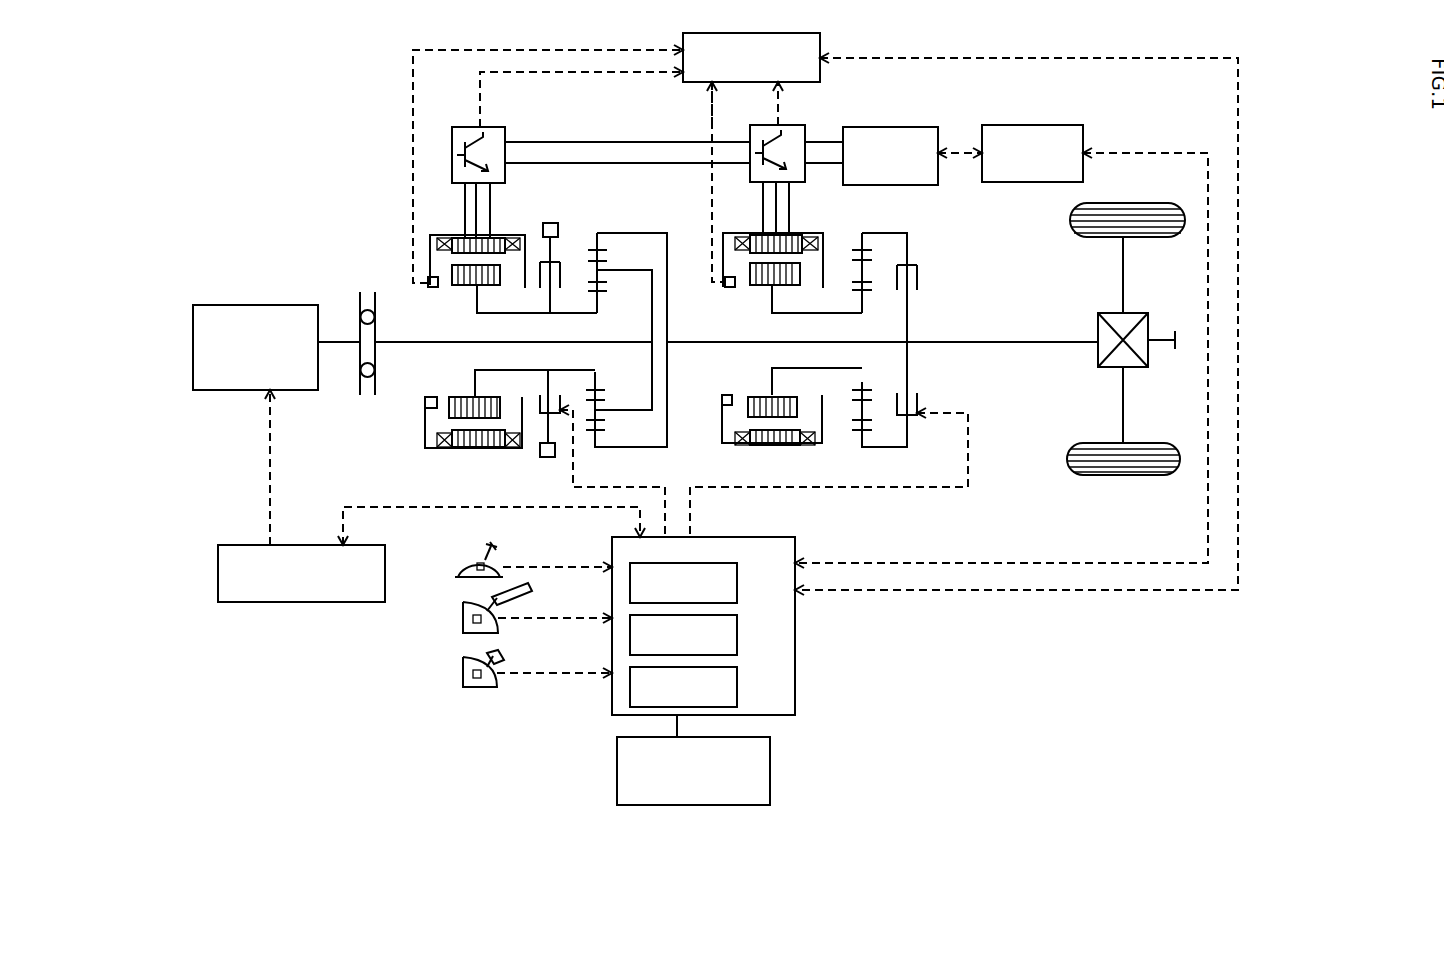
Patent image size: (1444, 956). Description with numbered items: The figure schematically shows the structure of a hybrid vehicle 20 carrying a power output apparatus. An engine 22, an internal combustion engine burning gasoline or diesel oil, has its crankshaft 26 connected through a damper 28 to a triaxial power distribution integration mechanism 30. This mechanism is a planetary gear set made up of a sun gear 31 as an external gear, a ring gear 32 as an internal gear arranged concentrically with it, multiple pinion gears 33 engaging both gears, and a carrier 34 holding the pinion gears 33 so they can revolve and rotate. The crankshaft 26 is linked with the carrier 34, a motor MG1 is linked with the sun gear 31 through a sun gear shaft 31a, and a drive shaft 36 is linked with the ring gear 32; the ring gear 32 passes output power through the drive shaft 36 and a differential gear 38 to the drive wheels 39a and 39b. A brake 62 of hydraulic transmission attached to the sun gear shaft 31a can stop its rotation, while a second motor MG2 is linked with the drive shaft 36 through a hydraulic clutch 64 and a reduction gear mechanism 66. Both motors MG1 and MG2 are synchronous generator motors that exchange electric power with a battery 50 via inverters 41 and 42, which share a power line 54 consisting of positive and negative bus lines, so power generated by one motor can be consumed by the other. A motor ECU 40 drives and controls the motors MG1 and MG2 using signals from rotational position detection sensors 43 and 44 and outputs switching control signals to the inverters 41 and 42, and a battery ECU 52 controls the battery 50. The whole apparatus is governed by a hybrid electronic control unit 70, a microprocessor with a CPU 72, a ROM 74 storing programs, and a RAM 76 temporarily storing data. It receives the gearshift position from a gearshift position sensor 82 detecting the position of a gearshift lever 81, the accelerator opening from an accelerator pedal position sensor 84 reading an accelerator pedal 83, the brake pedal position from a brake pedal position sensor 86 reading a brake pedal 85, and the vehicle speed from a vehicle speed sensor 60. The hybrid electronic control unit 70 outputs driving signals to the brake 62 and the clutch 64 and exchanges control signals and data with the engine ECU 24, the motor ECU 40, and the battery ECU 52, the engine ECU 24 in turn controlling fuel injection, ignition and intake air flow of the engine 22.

The hybrid vehicle 20 is at (1263, 73).
The engine 22 is at (253, 305).
The engine electronic control unit 24 is at (268, 602).
The crankshaft 26 is at (334, 318).
The damper 28 is at (377, 383).
The power distribution integration mechanism 30 is at (642, 220).
The sun gear 31 is at (605, 298).
The sun gear shaft 31a is at (580, 370).
The ring gear 32 is at (597, 240).
The pinion gears 33 is at (594, 266).
The carrier 34 is at (652, 392).
The drive shaft 36 is at (917, 338).
The differential gear 38 is at (1100, 313).
The drive wheel 39a is at (1097, 205).
The drive wheel 39b is at (1113, 463).
The motor electronic control unit 40 is at (820, 40).
The inverter 41 is at (507, 133).
The inverter 42 is at (790, 123).
The rotational position detection sensor 43 is at (433, 288).
The rotational position detection sensor 44 is at (730, 288).
The battery 50 is at (890, 127).
The battery electronic control unit 52 is at (1007, 125).
The power line 54 is at (568, 163).
The vehicle speed sensor 60 is at (770, 763).
The brake 62 is at (540, 395).
The clutch 64 is at (917, 400).
The reduction gear mechanism 66 is at (857, 407).
The hybrid electronic control unit 70 is at (795, 697).
The CPU 72 is at (718, 562).
The ROM 74 is at (720, 615).
The RAM 76 is at (720, 665).
The gearshift lever 81 is at (485, 547).
The gearshift position sensor 82 is at (462, 562).
The accelerator pedal 83 is at (487, 597).
The accelerator pedal position sensor 84 is at (467, 620).
The brake pedal 85 is at (485, 652).
The brake pedal position sensor 86 is at (467, 677).
The motor MG1 is at (475, 447).
The motor MG2 is at (773, 447).